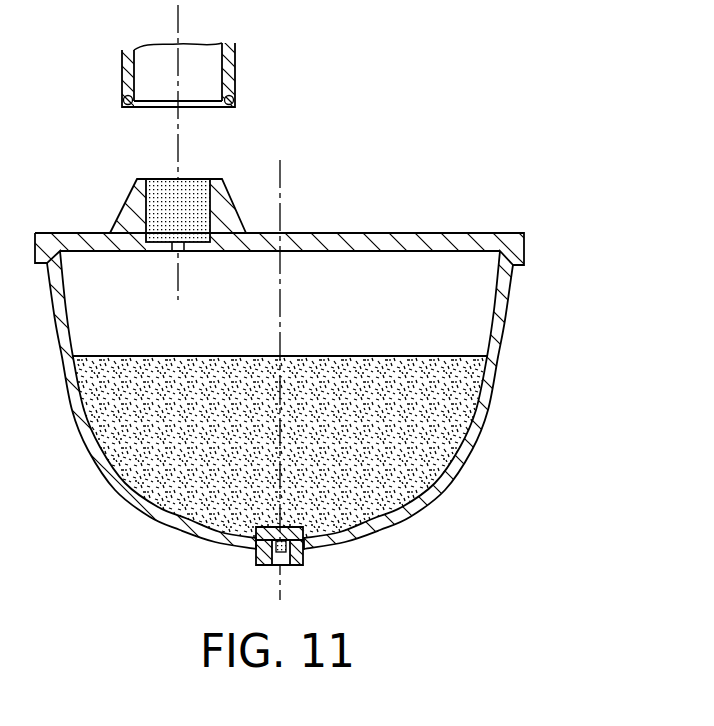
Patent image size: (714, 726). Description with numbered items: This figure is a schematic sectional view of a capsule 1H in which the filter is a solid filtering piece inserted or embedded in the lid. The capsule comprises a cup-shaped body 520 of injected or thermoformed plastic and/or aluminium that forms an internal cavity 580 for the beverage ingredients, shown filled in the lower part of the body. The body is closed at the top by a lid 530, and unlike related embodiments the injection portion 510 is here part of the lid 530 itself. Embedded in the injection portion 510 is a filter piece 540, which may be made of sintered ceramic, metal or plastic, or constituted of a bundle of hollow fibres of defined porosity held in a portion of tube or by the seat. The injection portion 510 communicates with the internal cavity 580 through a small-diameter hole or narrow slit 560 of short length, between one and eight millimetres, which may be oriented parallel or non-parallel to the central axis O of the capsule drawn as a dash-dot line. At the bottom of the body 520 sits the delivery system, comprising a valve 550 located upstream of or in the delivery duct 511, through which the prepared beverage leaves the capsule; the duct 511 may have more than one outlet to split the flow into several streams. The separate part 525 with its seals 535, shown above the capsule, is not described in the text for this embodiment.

The cap 525 is at (235, 62).
The seal ring 535 is at (124, 99).
The filter piece 540 is at (197, 179).
The small-diameter hole or narrow slit 560 is at (182, 252).
The injection portion 510 is at (97, 195).
The lid 530 is at (492, 233).
The cup-shaped body 520 is at (513, 296).
The internal cavity 580 is at (400, 476).
The valve 550 is at (257, 536).
The delivery duct 511 is at (285, 566).
The central axis O is at (282, 168).
The capsule 1H is at (112, 508).